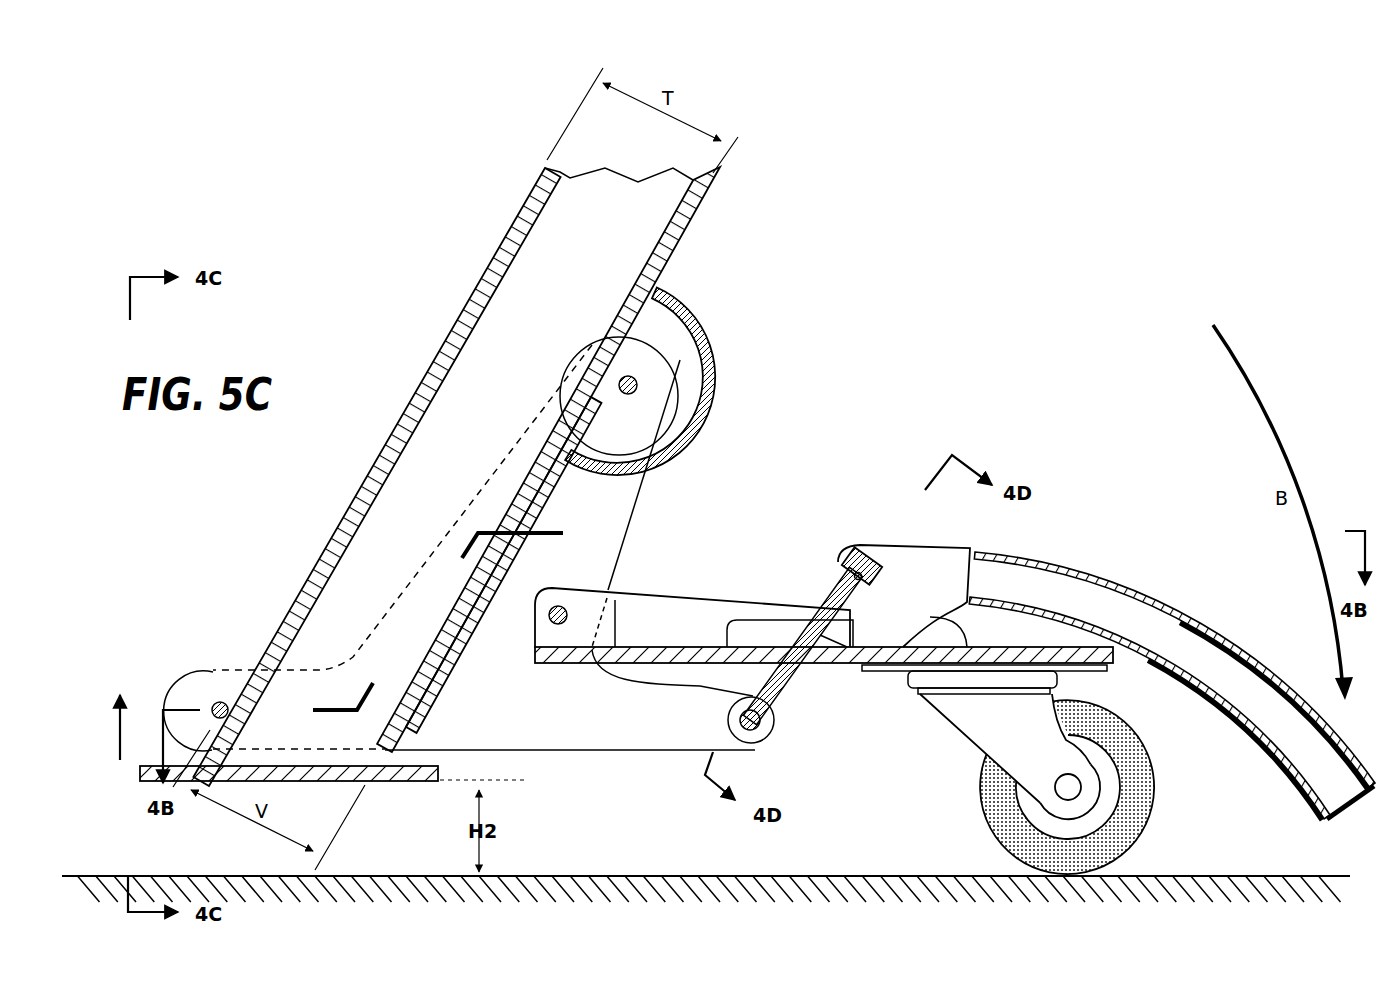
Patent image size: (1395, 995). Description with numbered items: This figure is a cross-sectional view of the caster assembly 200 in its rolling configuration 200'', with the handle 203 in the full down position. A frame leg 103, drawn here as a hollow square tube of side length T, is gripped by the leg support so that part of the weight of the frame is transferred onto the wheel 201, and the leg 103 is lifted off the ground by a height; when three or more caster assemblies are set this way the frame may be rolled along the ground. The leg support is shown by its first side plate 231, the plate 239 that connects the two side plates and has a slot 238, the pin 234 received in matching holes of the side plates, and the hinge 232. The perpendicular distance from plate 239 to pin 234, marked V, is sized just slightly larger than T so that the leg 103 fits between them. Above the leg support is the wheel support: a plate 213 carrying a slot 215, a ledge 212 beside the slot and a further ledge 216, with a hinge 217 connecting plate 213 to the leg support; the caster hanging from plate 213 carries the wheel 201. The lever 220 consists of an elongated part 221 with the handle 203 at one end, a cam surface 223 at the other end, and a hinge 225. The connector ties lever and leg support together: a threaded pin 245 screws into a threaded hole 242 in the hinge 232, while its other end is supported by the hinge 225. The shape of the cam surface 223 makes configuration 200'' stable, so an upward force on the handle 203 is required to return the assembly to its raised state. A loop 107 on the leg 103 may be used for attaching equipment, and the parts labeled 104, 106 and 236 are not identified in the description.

The leg 103 is at (322, 550).
The rear panel 104 is at (468, 298).
The front panel 106 is at (704, 235).
The loop 107 is at (690, 305).
The caster assembly 200 is at (849, 209).
The configuration 200'' is at (895, 578).
The wheel 201 is at (978, 800).
The handle 203 is at (1278, 758).
The ledge 212 is at (760, 620).
The plate 213 is at (615, 600).
The slot 215 is at (748, 647).
The ledge 216 is at (680, 600).
The hinge 217 is at (562, 608).
The lever 220 is at (1137, 545).
The elongated part 221 is at (1147, 600).
The cam surface 223 is at (845, 548).
The hinge 225 is at (845, 572).
The first side plate 231 is at (621, 753).
The hinge 232 is at (757, 735).
The pin 234 is at (218, 700).
The upper pivot 236 is at (640, 384).
The slot 238 is at (547, 512).
The plate 239 is at (437, 693).
The threaded hole 242 is at (760, 718).
The threaded pin 245 is at (790, 683).